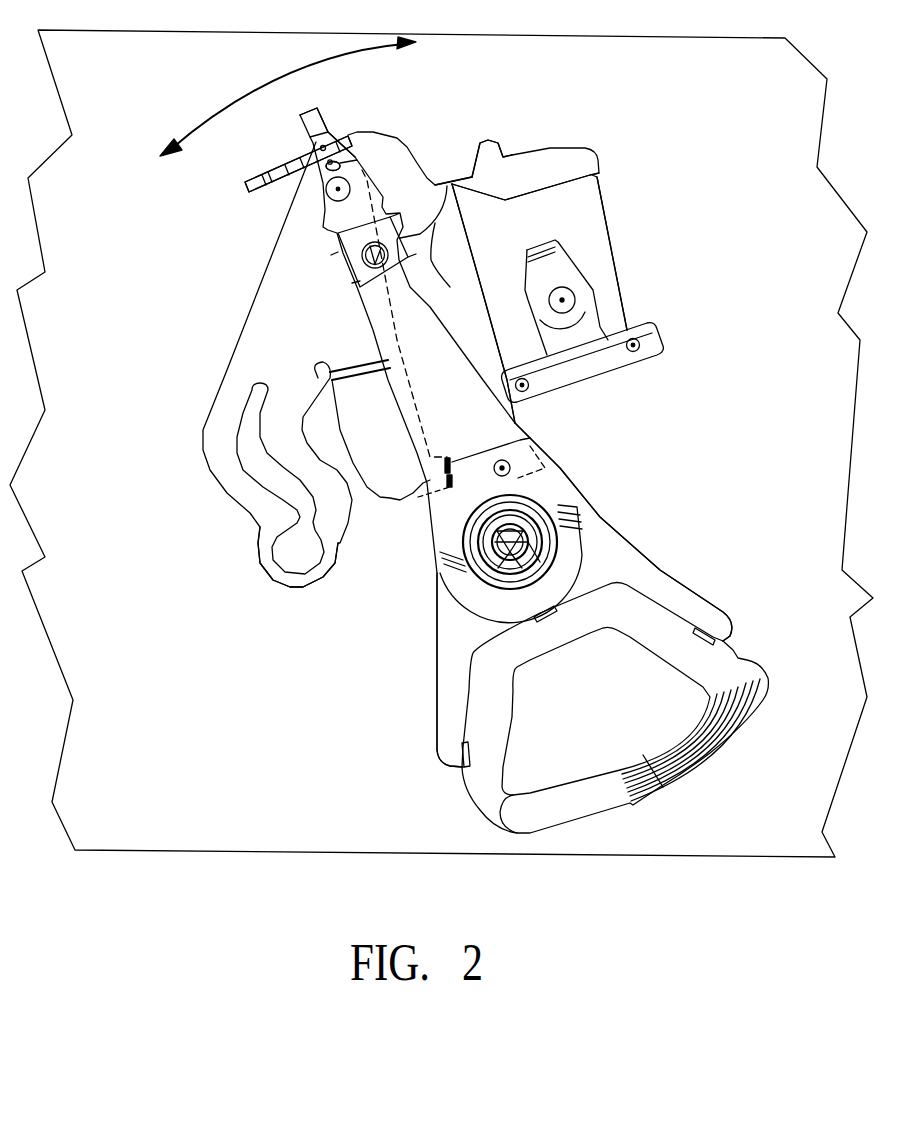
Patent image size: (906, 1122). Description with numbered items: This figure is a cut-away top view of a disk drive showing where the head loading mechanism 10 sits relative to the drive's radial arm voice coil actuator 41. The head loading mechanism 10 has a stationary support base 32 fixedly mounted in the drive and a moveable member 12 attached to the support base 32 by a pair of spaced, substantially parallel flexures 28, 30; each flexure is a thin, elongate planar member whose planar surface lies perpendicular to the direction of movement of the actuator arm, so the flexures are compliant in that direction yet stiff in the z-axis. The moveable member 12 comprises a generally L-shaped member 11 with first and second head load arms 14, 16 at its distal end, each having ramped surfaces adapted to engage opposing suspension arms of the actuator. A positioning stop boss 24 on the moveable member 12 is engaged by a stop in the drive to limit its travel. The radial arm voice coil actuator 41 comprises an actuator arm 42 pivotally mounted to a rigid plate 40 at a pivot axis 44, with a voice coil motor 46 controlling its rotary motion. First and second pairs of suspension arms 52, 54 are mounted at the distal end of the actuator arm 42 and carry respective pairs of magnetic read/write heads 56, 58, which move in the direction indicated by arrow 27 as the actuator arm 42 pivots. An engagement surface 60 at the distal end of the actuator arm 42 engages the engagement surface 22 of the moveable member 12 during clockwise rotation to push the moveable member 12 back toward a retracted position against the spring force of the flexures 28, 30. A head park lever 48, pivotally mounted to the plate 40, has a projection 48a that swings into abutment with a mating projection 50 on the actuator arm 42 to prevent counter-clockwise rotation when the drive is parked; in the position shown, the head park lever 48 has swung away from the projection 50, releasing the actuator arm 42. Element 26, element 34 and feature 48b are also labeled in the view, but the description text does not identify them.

The head loading mechanism 10 is at (643, 190).
The generally L-shaped member 11 is at (380, 143).
The moveable member 12 is at (567, 160).
The first head load arm 14 is at (268, 177).
The second head load arm 16 is at (268, 177).
The engagement surface 22 is at (447, 184).
The positioning stop boss 24 is at (488, 140).
The insert 26 is at (560, 264).
The arrow 27 is at (293, 72).
The flexure 28 is at (610, 261).
The flexure 30 is at (478, 258).
The stationary support base 32 is at (622, 368).
The hole 34 is at (563, 300).
The rigid plate 40 is at (112, 81).
The radial arm voice coil actuator 41 is at (632, 505).
The actuator arm 42 is at (520, 418).
The pivot axis 44 is at (487, 572).
The voice coil motor 46 is at (657, 623).
The head park lever 48 is at (273, 333).
The projection 48a is at (440, 483).
The spring loop 48b is at (270, 477).
The mating projection 50 is at (516, 460).
The first pair of suspension arms 52 is at (340, 215).
The second pair of suspension arms 54 is at (340, 215).
The magnetic read/write heads 56 is at (324, 118).
The magnetic read/write heads 58 is at (324, 118).
The engagement surface 60 is at (420, 272).